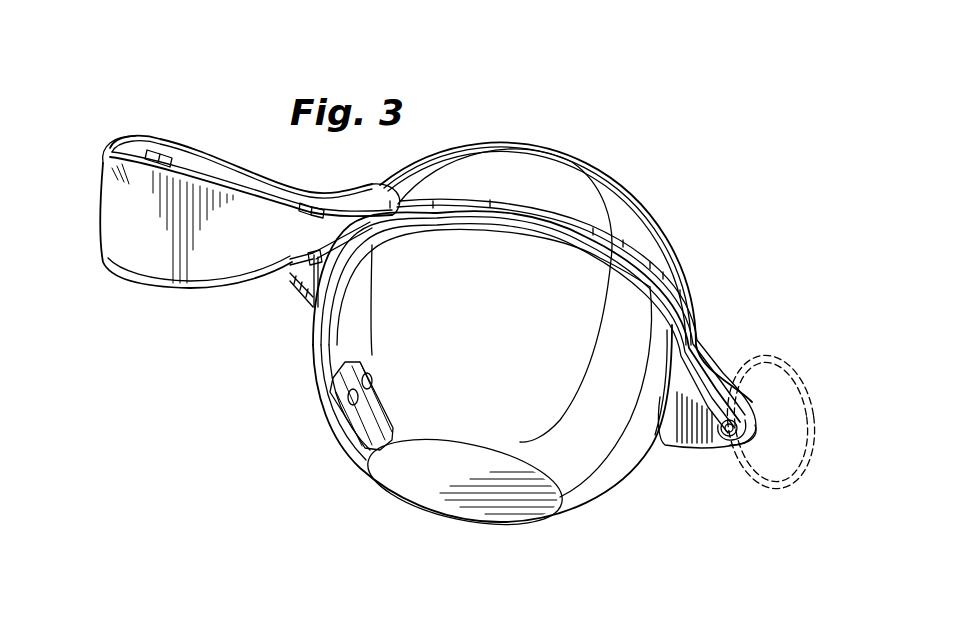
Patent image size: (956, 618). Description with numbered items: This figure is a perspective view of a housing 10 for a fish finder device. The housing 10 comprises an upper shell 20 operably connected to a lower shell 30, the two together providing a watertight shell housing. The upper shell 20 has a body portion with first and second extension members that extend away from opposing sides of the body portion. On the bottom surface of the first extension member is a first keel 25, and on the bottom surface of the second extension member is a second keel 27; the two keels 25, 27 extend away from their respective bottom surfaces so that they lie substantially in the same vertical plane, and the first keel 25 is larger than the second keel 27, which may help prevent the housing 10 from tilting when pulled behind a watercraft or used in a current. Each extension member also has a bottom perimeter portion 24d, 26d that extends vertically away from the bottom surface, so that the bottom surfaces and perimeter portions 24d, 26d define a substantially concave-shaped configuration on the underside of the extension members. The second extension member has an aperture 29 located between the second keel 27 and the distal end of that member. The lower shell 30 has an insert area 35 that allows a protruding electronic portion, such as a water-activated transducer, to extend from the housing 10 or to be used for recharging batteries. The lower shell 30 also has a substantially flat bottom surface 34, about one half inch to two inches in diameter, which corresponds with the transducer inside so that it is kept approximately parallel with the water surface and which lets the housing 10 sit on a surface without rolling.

The housing 10 is at (631, 154).
The upper shell 20 is at (527, 180).
The bottom perimeter portion 24d is at (347, 216).
The first keel 25 is at (235, 258).
The bottom perimeter portion 26d is at (697, 385).
The second keel 27 is at (688, 437).
The aperture 29 is at (728, 437).
The lower shell 30 is at (507, 389).
The substantially flat bottom surface 34 is at (440, 480).
The insert area 35 is at (350, 413).